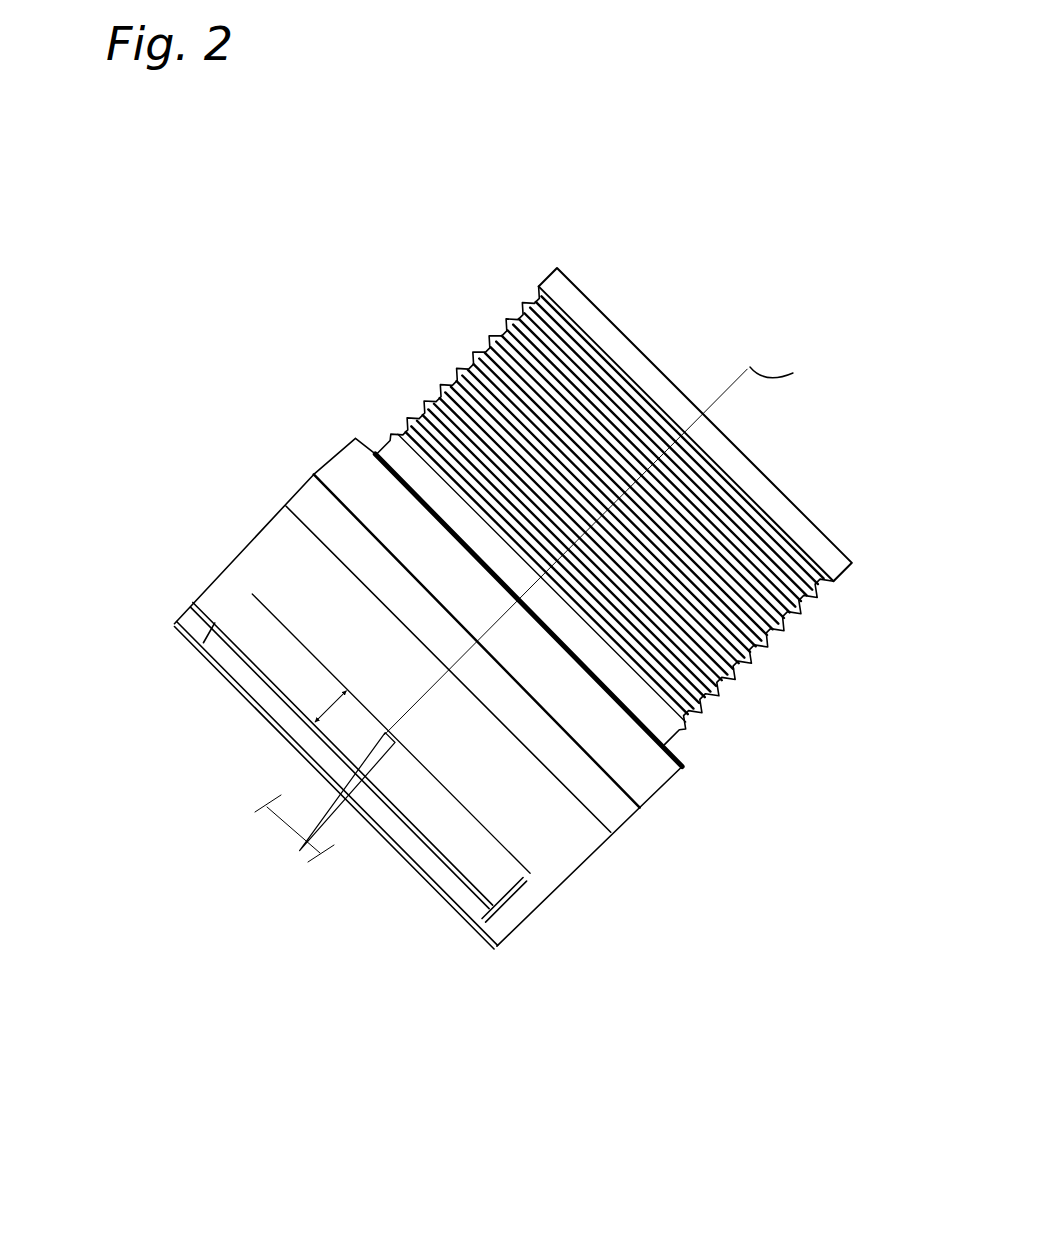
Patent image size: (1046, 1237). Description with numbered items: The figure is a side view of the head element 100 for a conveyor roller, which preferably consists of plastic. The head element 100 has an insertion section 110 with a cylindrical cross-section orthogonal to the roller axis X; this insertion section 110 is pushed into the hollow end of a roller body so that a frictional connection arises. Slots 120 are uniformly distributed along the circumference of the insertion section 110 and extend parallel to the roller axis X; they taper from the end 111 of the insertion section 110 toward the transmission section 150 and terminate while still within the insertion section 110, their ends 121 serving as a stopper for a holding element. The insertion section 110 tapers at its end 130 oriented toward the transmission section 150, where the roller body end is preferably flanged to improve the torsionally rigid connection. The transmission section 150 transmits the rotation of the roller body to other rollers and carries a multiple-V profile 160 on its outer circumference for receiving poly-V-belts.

The head element 100 is at (724, 249).
The insertion section 110 is at (645, 817).
The end of the insertion section 111 is at (276, 736).
The slots 120 is at (203, 641).
The ends of the slots 121 is at (250, 593).
The end of the insertion section oriented towards the transmission section 130 is at (310, 483).
The transmission section 150 is at (865, 625).
The multiple-V profile 160 is at (470, 360).